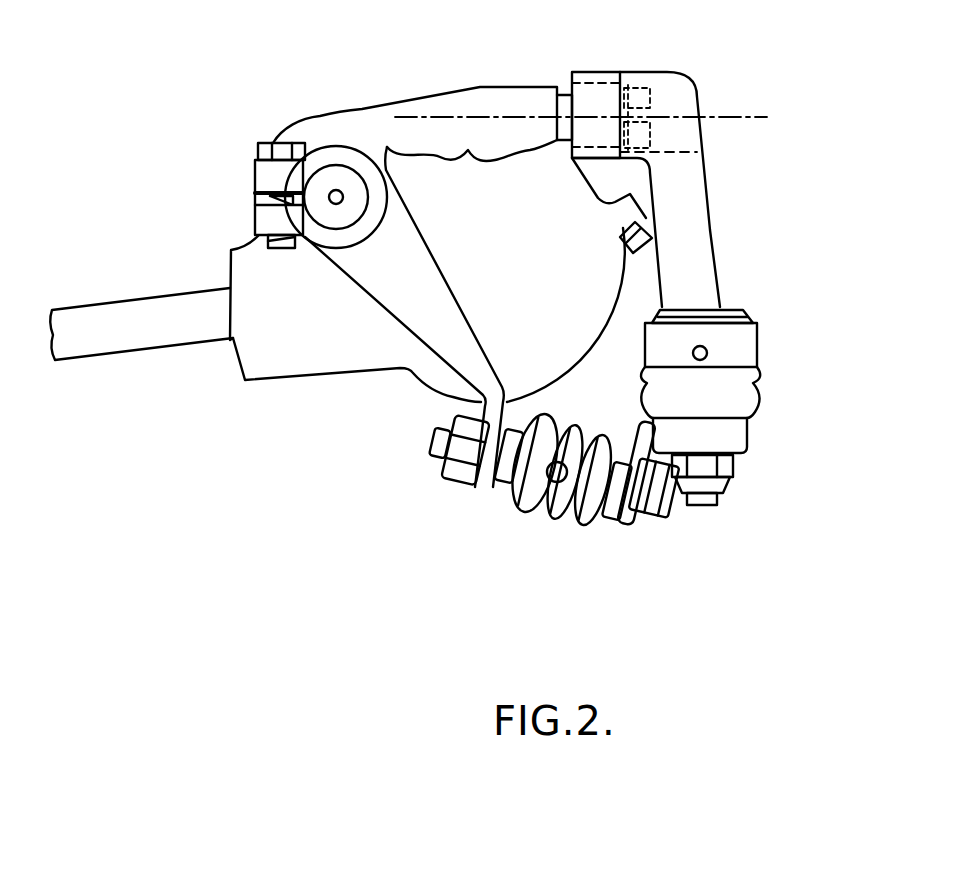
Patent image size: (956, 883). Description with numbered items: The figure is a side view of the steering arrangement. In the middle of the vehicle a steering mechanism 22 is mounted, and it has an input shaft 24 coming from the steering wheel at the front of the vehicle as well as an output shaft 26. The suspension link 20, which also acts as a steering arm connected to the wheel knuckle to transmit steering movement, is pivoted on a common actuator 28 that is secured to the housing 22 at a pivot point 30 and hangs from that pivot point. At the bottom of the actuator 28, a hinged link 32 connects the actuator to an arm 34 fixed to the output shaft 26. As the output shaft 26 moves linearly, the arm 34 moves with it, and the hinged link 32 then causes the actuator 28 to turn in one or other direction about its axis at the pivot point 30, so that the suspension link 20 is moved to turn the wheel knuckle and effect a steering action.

The suspension link 20 is at (732, 399).
The steering mechanism 22 is at (337, 360).
The input shaft 24 is at (148, 335).
The output shaft 26 is at (354, 196).
The actuator 28 is at (698, 242).
The pivot point 30 is at (708, 117).
The hinged link 32 is at (552, 498).
The arm 34 is at (428, 283).